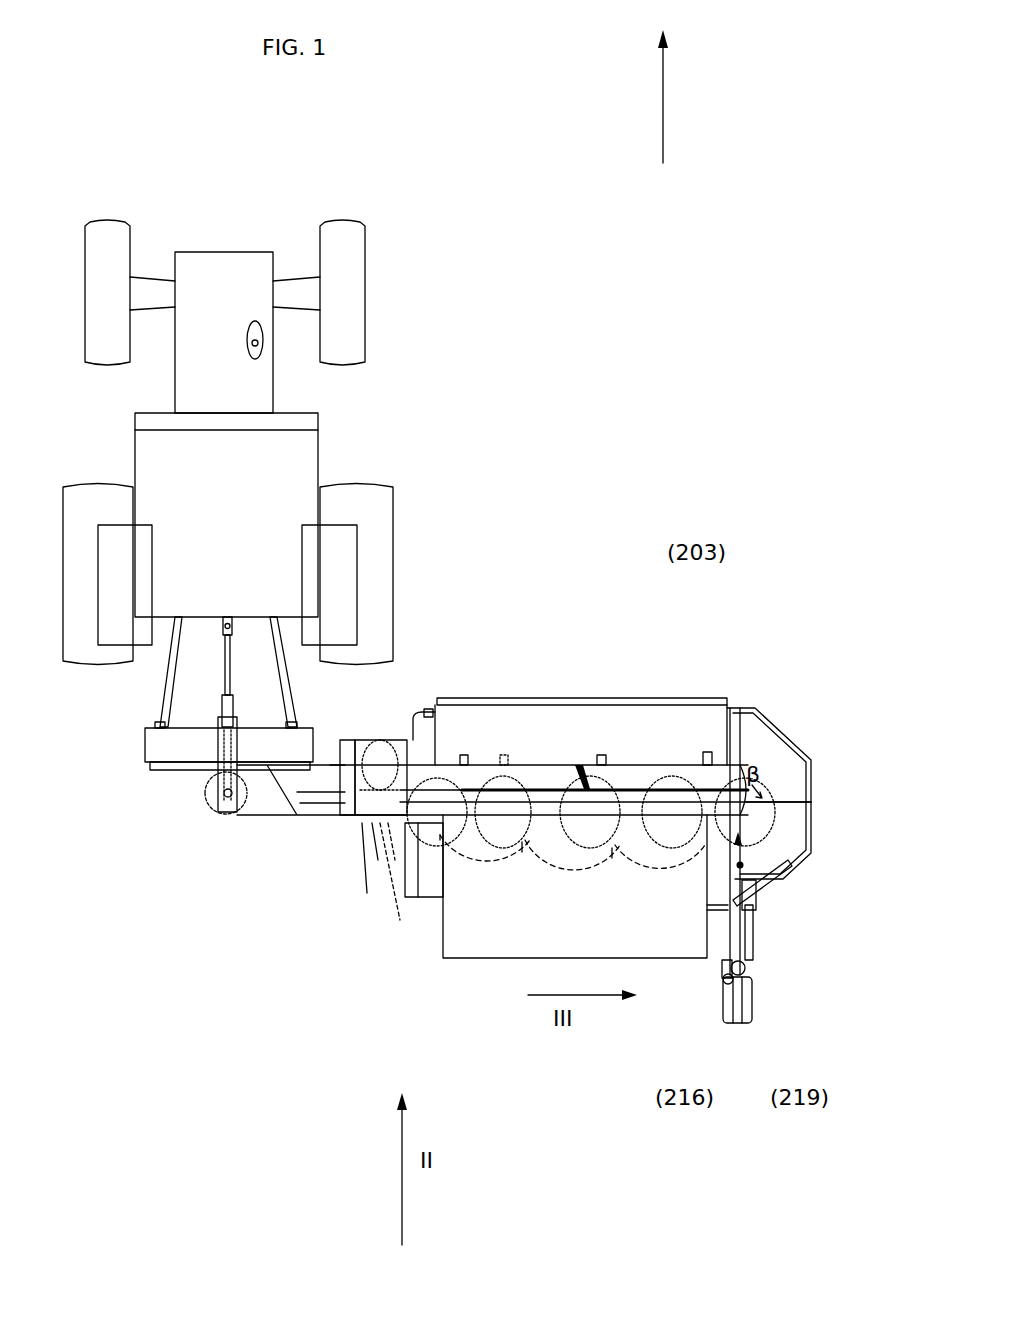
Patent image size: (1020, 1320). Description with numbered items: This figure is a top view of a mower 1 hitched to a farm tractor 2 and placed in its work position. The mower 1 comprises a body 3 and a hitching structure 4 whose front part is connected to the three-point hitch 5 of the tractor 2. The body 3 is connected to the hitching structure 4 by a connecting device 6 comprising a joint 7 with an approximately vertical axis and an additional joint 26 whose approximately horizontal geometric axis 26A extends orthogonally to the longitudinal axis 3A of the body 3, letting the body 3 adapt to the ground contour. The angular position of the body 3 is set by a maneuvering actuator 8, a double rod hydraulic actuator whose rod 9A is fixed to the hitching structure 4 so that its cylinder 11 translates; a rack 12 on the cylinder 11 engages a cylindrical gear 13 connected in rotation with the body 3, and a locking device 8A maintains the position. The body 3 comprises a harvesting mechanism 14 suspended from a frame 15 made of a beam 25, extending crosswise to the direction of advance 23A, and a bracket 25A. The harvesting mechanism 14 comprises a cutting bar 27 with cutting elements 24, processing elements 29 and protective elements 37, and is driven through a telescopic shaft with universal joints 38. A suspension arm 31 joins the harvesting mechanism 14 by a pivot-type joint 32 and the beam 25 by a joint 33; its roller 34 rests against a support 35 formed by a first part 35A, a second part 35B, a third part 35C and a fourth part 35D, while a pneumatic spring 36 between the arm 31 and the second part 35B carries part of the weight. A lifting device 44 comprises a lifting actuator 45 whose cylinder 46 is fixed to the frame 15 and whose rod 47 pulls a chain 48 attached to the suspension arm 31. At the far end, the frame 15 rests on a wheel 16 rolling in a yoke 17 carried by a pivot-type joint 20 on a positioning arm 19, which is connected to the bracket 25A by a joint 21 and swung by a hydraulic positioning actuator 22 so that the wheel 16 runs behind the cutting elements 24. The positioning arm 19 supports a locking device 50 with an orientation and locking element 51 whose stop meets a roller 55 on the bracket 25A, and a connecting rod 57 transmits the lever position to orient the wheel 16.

The mower 1 is at (569, 458).
The farm tractor 2 is at (316, 424).
The body 3 is at (595, 690).
The longitudinal axis of body 3A is at (773, 798).
The hitching structure 4 is at (148, 744).
The three-point hitch 5 is at (166, 694).
The connecting device 6 is at (238, 792).
The joint 7 is at (230, 815).
The maneuvering actuator 8 is at (145, 762).
The locking device 8A is at (155, 773).
The rod 9A is at (277, 762).
The cylinder 11 is at (173, 756).
The rack 12 is at (188, 773).
The cylindrical gear 13 is at (213, 800).
The harvesting mechanism 14 is at (438, 962).
The frame 15 is at (625, 772).
The wheel 16 is at (727, 1015).
The yoke 17 is at (722, 964).
The positioning arm 19 is at (740, 945).
The pivot-type joint 20 is at (728, 1003).
The joint 21 is at (757, 866).
The hydraulic positioning actuator 22 is at (753, 917).
The direction of advance at work 23A is at (665, 85).
The cutting elements 24 is at (828, 836).
The beam 25 is at (638, 852).
The bracket 25A is at (735, 872).
The additional joint 26 is at (230, 822).
The geometric axis 26A is at (228, 830).
The cutting bar 27 is at (525, 830).
The processing elements 29 is at (472, 925).
The suspension arm 31 is at (535, 776).
The pivot-type joint 32 is at (581, 776).
The joint 33 is at (291, 793).
The roller 34 is at (347, 800).
The support 35 is at (380, 823).
The first part 35A is at (443, 956).
The second part 35B is at (327, 746).
The third part 35C is at (365, 742).
The fourth part 35D is at (398, 756).
The pneumatic spring 36 is at (379, 770).
The protective elements 37 is at (790, 744).
The telescopic shaft with universal joints 38 is at (233, 650).
The lifting device 44 is at (705, 722).
The lifting actuator 45 is at (705, 776).
The cylinder 46 is at (674, 782).
The rod 47 is at (578, 797).
The chain 48 is at (532, 792).
The locking device 50 is at (758, 893).
The orientation and locking element 51 is at (755, 912).
The roller 55 is at (740, 847).
The connecting rod 57 is at (728, 940).